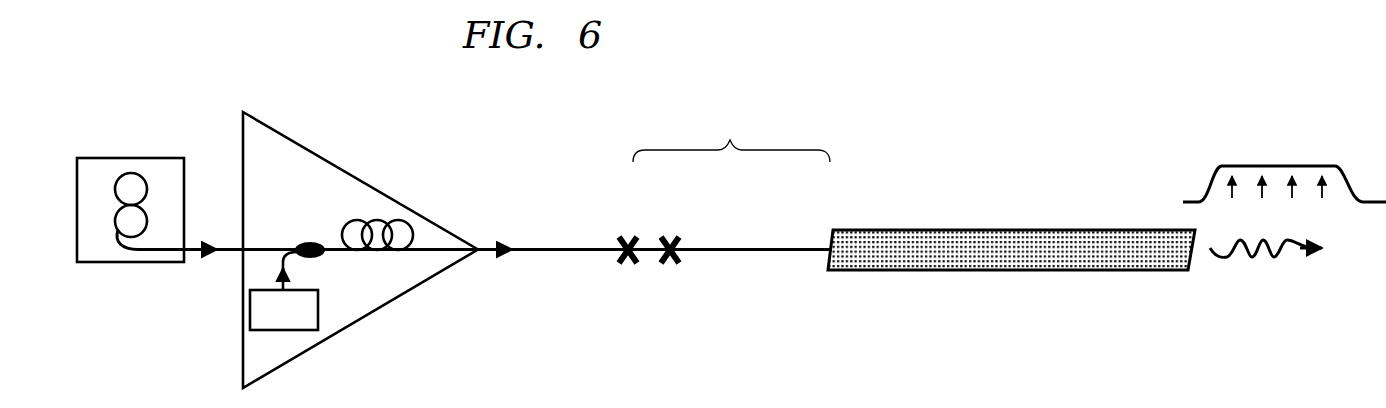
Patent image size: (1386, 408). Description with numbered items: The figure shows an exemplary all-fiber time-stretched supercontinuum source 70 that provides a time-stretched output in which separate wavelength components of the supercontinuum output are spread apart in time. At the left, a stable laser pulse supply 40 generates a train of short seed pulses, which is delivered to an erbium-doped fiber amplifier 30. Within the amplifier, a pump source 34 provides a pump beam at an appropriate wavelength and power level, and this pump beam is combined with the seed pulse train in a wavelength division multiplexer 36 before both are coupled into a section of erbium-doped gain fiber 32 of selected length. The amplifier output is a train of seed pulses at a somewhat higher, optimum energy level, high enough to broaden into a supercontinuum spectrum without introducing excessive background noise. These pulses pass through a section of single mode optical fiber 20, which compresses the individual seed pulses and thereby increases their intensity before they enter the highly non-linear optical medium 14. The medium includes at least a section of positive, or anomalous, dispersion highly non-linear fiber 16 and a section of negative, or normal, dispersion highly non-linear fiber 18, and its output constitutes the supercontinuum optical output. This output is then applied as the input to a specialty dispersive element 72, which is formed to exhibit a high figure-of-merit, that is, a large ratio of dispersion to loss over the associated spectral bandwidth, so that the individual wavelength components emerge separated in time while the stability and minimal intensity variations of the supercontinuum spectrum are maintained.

The stable laser pulse supply 40 is at (138, 158).
The erbium-doped fiber amplifier 30 is at (322, 153).
The gain fiber 32 is at (372, 220).
The pump source 34 is at (318, 306).
The wavelength division multiplexer 36 is at (301, 243).
The single mode optical fiber 20 is at (536, 248).
The highly non-linear optical medium 14 is at (742, 130).
The positive dispersion highly non-linear fiber 16 is at (652, 248).
The negative dispersion highly non-linear fiber 18 is at (758, 248).
The specialty dispersive element 72 is at (1052, 230).
The all-fiber time-stretched supercontinuum source 70 is at (1264, 78).